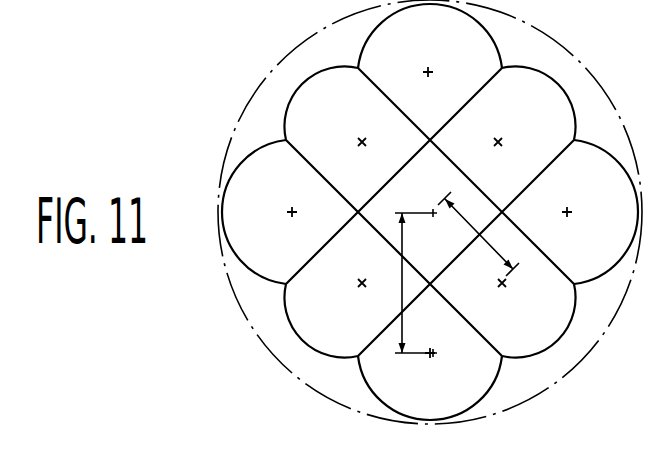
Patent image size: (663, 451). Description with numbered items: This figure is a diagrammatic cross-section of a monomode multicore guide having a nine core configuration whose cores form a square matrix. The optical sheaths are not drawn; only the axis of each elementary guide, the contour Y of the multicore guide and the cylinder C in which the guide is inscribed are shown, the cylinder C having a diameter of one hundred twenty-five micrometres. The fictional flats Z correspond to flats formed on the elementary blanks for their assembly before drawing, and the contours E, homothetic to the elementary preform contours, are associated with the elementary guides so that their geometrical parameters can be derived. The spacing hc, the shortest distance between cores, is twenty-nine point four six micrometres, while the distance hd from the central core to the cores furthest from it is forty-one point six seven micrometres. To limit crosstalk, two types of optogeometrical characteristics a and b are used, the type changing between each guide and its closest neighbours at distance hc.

The elementary guide of first optogeometrical type a is at (430, 212).
The elementary guide of second optogeometrical type b is at (429, 211).
The fictional flat Z is at (371, 168).
The contour of elementary preform E is at (502, 0).
The contour of multicore guide Y is at (322, 352).
The cylinder C is at (582, 358).
The distance from central core to furthest cores hd is at (419, 283).
The spacing between closest cores hc is at (479, 234).